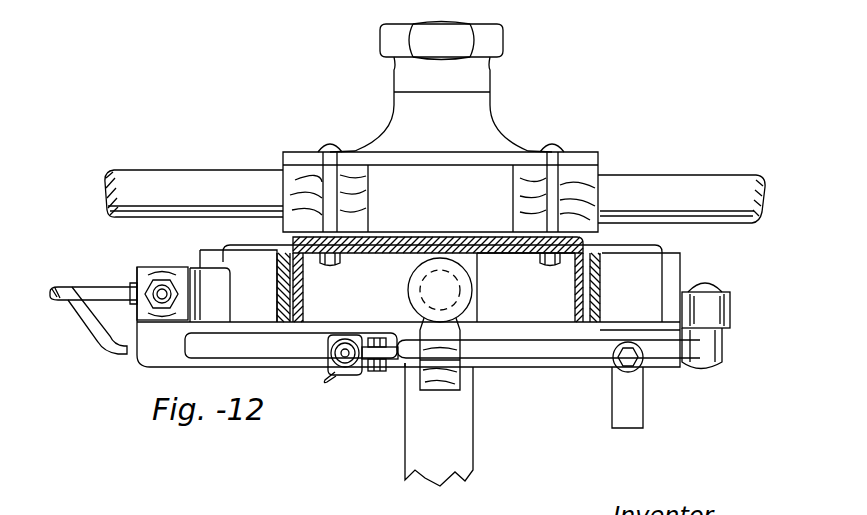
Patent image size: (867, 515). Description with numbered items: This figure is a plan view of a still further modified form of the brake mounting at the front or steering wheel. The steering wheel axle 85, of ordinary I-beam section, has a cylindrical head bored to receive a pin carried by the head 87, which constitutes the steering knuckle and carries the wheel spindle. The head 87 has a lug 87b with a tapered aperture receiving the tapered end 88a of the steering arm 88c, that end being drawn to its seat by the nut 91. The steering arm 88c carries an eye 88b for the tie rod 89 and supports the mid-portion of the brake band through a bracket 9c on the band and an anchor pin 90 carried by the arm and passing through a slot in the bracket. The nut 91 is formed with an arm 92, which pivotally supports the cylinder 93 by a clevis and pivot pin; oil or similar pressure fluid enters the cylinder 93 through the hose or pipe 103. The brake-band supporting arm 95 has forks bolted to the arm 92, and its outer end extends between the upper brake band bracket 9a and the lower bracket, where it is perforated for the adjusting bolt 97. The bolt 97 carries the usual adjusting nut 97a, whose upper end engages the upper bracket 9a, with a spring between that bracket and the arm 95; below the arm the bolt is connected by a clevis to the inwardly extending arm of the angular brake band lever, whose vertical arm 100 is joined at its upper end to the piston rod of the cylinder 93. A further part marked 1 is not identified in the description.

The pipe fitting with flange 1 is at (575, 185).
The upper brake band bracket 9a is at (180, 270).
The bracket 9c is at (733, 305).
The steering wheel axle 85 is at (462, 457).
The head 87 is at (405, 289).
The lug 87b is at (450, 392).
The tapered end 88a is at (484, 383).
The eye 88b is at (650, 371).
The steering arm 88c is at (572, 370).
The tie rod 89 is at (632, 411).
The anchor pin 90 is at (702, 366).
The nut 91 is at (410, 366).
The arm 92 is at (346, 378).
The cylinder 93 is at (327, 346).
The brake-band supporting arm 95 is at (212, 368).
The adjusting bolt 97 is at (160, 290).
The adjusting nut 97a is at (148, 290).
The vertical arm of the angular brake band lever 100 is at (95, 334).
The hose or pipe 103 is at (356, 337).